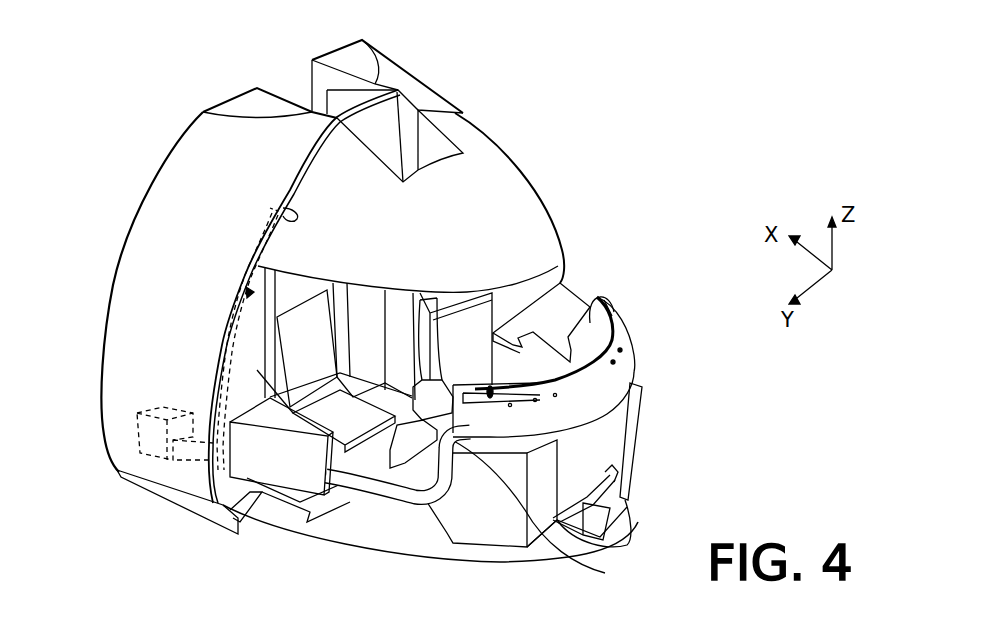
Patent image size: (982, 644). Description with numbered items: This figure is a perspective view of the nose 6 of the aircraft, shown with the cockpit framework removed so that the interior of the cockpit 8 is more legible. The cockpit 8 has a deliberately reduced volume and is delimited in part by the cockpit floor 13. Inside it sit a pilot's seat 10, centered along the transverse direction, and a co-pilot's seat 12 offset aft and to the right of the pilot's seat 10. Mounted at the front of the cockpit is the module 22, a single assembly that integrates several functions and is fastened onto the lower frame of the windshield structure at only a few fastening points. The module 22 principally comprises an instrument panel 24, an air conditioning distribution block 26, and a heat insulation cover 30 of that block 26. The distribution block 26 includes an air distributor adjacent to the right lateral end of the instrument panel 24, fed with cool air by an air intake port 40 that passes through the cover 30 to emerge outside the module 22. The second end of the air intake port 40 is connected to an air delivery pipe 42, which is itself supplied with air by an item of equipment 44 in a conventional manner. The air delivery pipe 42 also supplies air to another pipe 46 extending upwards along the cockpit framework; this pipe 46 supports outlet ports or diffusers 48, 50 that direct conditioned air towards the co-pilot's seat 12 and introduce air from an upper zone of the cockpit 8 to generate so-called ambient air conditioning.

The nose 6 is at (640, 268).
The cockpit 8 is at (538, 318).
The pilot's seat 10 is at (433, 333).
The co-pilot's seat 12 is at (218, 331).
The cockpit floor 13 is at (403, 533).
The module 22 is at (600, 376).
The instrument panel 24 is at (591, 320).
The air conditioning distribution block 26 is at (627, 547).
The heat insulation cover 30 is at (603, 393).
The air intake port 40 is at (467, 397).
The air delivery pipe 42 is at (357, 487).
The item of equipment 44 is at (150, 430).
The pipe 46 is at (307, 342).
The diffuser 48 is at (253, 292).
The diffuser 50 is at (284, 210).